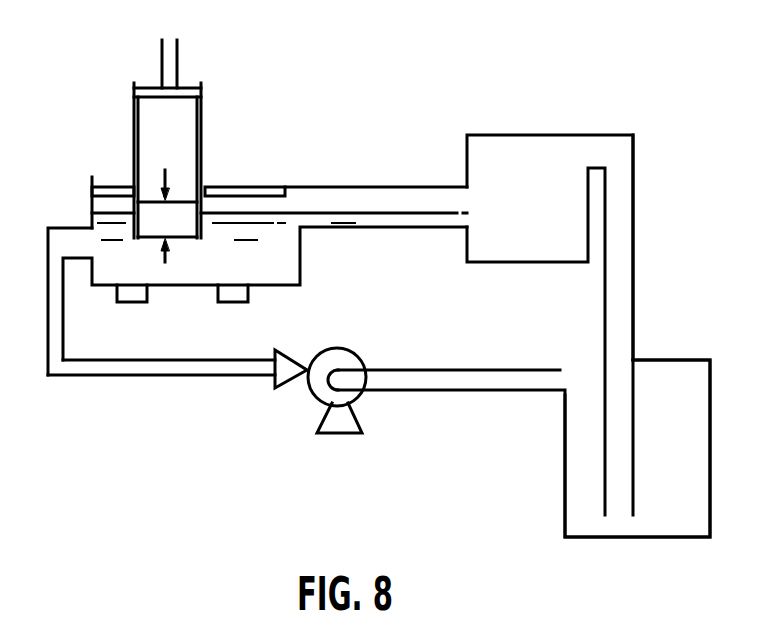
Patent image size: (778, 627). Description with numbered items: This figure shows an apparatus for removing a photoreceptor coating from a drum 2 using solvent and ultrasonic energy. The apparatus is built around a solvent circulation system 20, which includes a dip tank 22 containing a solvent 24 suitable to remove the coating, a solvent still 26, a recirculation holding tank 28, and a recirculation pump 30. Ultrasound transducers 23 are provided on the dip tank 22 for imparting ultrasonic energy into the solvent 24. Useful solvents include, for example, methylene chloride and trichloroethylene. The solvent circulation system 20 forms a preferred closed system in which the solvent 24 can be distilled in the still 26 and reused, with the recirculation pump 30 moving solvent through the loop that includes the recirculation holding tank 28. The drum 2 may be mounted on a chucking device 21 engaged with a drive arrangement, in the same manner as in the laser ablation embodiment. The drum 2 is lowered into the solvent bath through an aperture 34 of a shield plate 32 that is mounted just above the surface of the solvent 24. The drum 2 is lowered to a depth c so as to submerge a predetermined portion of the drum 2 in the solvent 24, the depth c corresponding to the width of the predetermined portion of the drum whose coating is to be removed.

The drum 2 is at (202, 126).
The solvent circulation system 20 is at (663, 156).
The chucking device 21 is at (177, 82).
The dip tank 22 is at (302, 262).
The ultrasound transducers 23 is at (217, 302).
The solvent 24 is at (105, 210).
The solvent still 26 is at (520, 134).
The recirculation holding tank 28 is at (710, 428).
The recirculation pump 30 is at (347, 435).
The shield plate 32 is at (117, 186).
The aperture 34 is at (205, 184).